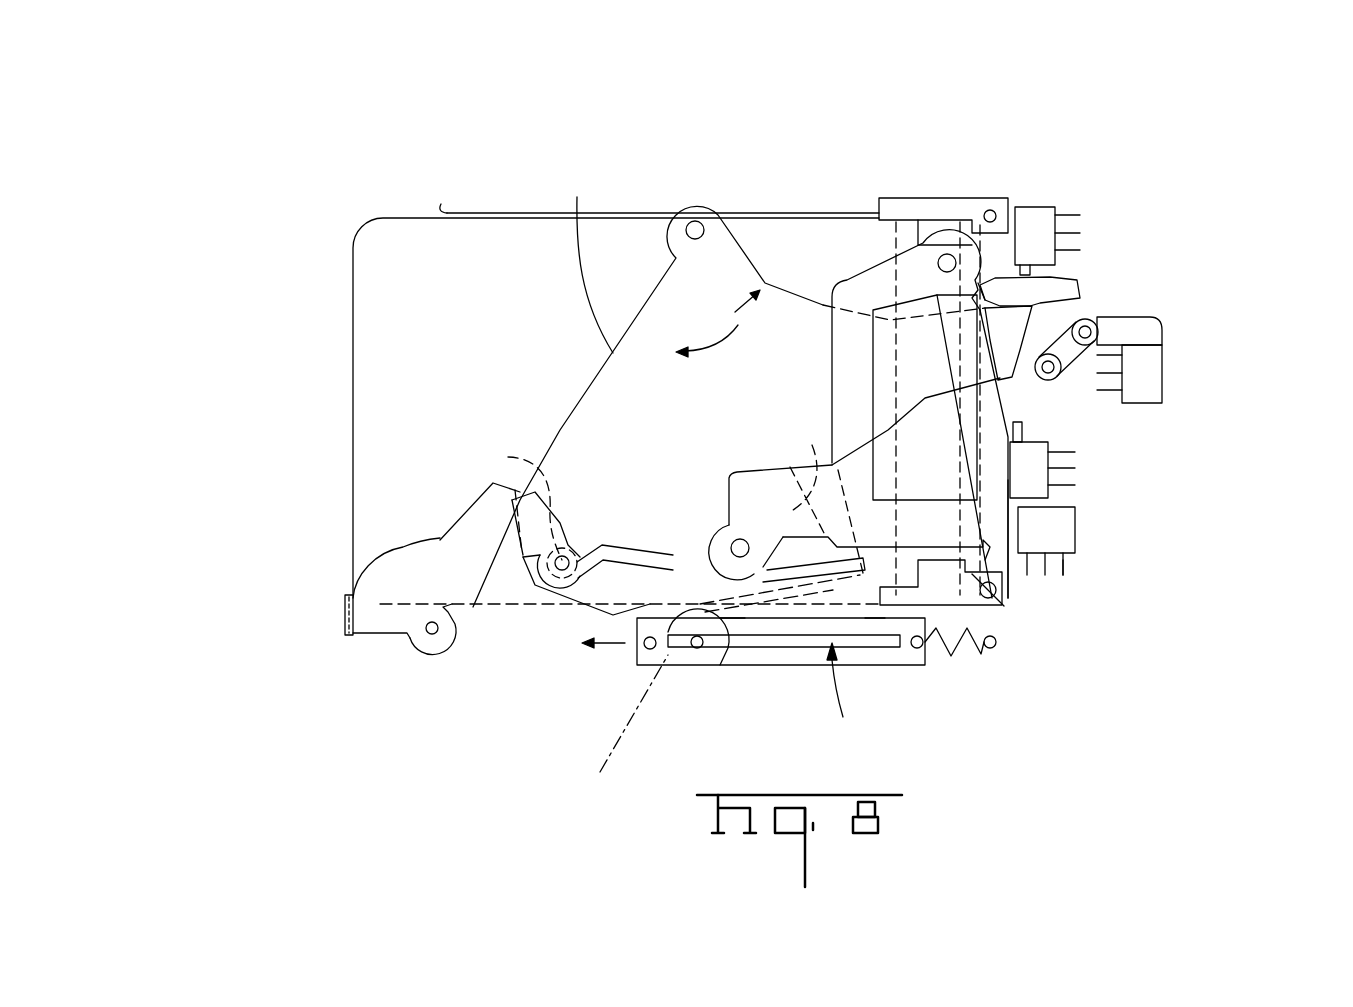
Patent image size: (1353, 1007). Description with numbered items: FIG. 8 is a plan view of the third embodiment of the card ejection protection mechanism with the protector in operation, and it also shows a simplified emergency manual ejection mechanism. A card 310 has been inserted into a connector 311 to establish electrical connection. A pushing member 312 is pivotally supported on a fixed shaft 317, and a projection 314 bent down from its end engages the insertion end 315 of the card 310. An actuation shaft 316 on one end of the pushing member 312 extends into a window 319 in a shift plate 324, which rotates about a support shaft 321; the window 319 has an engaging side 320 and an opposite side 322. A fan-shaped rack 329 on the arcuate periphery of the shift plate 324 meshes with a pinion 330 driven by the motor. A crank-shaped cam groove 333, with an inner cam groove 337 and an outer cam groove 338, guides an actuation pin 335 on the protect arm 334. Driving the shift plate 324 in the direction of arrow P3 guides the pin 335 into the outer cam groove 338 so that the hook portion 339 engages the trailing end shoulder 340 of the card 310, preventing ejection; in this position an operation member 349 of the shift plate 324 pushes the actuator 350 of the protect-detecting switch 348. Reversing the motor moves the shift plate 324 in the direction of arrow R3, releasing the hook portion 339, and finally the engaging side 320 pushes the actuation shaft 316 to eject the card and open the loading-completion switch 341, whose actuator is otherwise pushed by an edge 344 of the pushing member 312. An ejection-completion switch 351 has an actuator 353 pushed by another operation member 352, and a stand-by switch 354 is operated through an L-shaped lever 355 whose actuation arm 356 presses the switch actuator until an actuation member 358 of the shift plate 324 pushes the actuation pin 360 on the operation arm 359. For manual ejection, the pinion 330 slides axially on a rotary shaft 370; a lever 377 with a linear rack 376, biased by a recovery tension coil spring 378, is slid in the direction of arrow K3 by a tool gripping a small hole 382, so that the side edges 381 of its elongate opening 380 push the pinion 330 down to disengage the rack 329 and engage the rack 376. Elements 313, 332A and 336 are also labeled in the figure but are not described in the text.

The card 310 is at (353, 350).
The connector 311 is at (1075, 246).
The pushing member 312 is at (836, 290).
The cover plate 313 is at (473, 212).
The projection 314 is at (1005, 600).
The insertion end 315 is at (1013, 483).
The actuation shaft 316 is at (733, 557).
The fixed shaft 317 is at (943, 256).
The window 319 is at (738, 468).
The engaging side 320 is at (815, 494).
The support shaft 321 is at (692, 220).
The opposite side 322 is at (712, 512).
The shift plate 324 is at (729, 389).
The fan-shaped rack 329 is at (730, 617).
The pinion 330 is at (715, 706).
The slot 332A is at (869, 691).
The crank shaped cam groove 333 is at (575, 553).
The protect arm 334 is at (370, 567).
The actuation pin 335 is at (512, 505).
The lever lobe 336 is at (415, 635).
The inner cam groove 337 is at (642, 547).
The outer cam groove 338 is at (513, 507).
The hook portion 339 is at (343, 613).
The trailing end shoulder 340 is at (353, 590).
The switch (S1) 341 is at (1075, 522).
The edge 344 is at (1063, 570).
The switch (S2) 348 is at (1025, 218).
The operation member 349 is at (1035, 257).
The actuator 350 is at (988, 208).
The switch (S3) 351 is at (1033, 473).
The operation member 352 is at (1075, 300).
The actuator 353 is at (1020, 427).
The switch (S4) 354 is at (1150, 368).
The L-shaped lever 355 is at (1092, 320).
The actuation arm 356 is at (1165, 322).
The actuation member 358 is at (1078, 278).
The operation arm 359 is at (1083, 360).
The actuation pin 360 is at (1057, 382).
The rotary shaft 370 is at (668, 655).
The linear rack 376 is at (870, 620).
The lever 377 is at (616, 732).
The recovery tension coil spring 378 is at (970, 655).
The elongate opening 380 is at (817, 650).
The side edges 381 is at (702, 652).
The small hole 382 is at (645, 648).
The arrow P3 is at (732, 316).
The arrow R3 is at (727, 337).
The arrow K3 is at (581, 650).